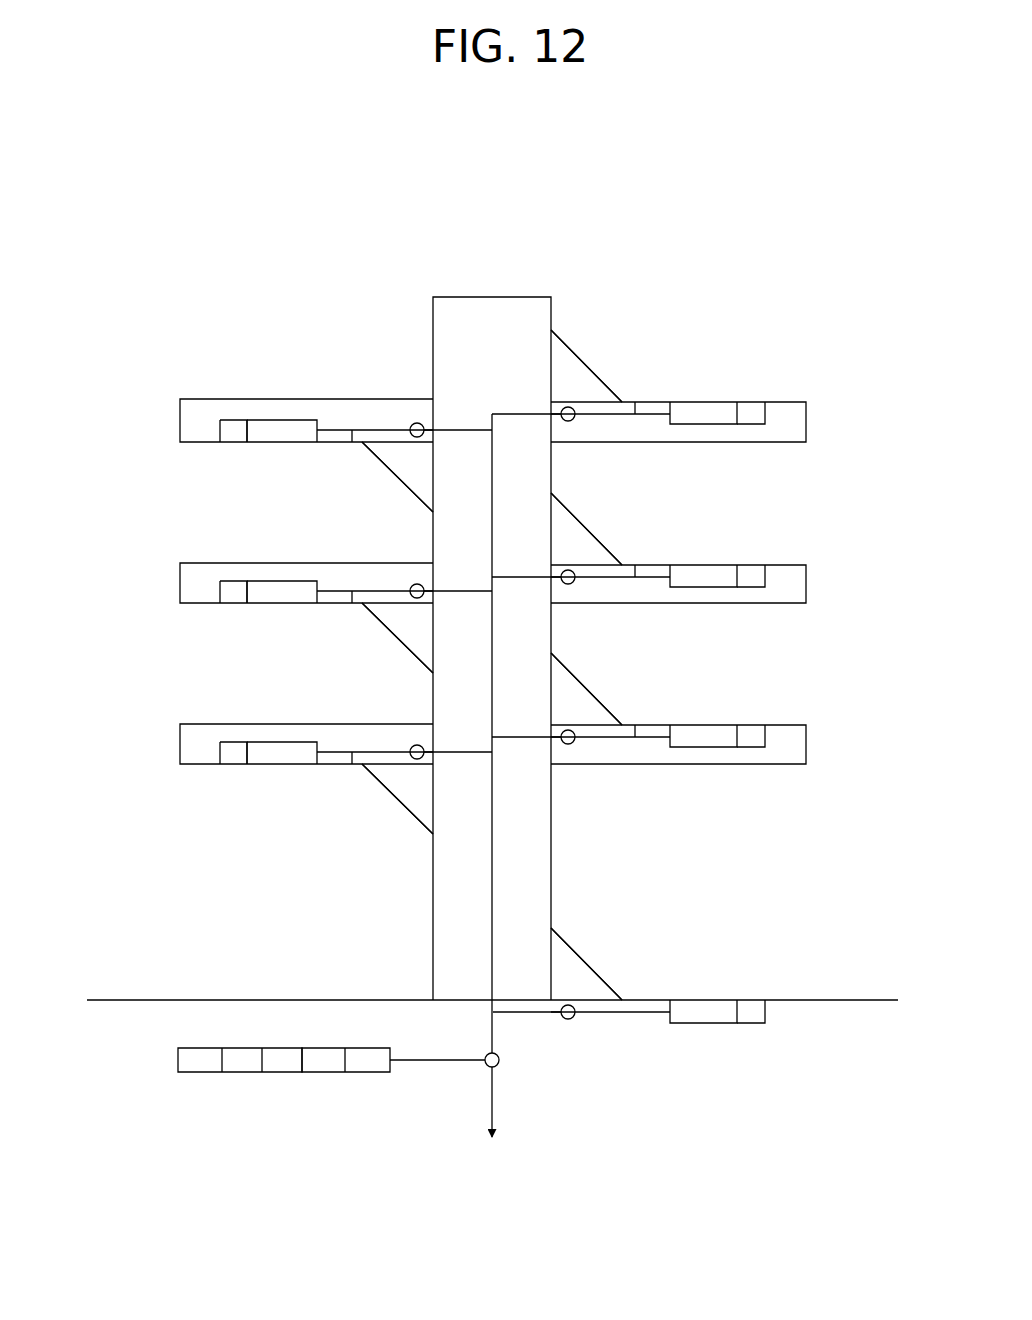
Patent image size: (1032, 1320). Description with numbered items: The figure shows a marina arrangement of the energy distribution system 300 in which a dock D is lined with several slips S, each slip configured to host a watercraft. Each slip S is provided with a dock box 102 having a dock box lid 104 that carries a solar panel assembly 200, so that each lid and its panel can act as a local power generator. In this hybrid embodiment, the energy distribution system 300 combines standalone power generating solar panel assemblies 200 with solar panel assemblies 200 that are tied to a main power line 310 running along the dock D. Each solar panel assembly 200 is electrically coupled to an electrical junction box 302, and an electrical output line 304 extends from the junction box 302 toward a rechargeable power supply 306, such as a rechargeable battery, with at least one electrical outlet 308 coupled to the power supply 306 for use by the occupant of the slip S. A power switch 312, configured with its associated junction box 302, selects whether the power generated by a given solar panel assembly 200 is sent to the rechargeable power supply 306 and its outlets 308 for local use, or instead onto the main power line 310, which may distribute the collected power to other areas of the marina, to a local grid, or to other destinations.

The energy distribution system 300 is at (623, 180).
The solar panel assembly 200 is at (568, 407).
The main power line 310 is at (493, 905).
The electrical output line 304 is at (460, 428).
The rechargeable power supply 306 is at (270, 443).
The electrical outlet 308 is at (227, 443).
The power switch 312 is at (416, 440).
The electrical junction box 302 is at (414, 425).
The dock box 102 is at (578, 355).
The dock box lid 104 is at (507, 640).
The dock D is at (390, 262).
The slip S is at (188, 530).